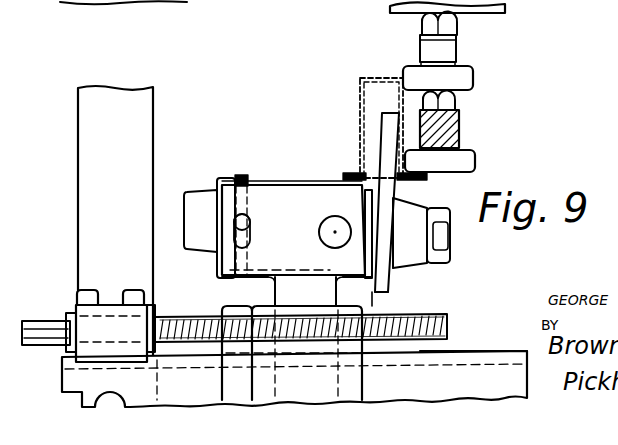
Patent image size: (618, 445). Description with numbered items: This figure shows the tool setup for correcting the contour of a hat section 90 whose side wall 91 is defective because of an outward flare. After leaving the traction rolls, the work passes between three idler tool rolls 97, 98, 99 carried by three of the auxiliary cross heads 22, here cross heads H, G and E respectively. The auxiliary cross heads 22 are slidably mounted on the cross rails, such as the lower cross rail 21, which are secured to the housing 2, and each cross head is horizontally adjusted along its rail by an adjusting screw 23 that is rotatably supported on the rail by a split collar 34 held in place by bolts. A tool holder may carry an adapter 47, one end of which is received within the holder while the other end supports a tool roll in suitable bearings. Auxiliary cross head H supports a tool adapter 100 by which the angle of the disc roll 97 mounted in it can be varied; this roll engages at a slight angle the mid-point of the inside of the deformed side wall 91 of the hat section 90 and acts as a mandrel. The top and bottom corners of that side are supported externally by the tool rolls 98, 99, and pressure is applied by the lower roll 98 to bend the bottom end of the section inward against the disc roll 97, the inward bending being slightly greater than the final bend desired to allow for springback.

The housing 2 is at (77, 165).
The split collar 34 is at (87, 306).
The adjusting screw 23 is at (200, 318).
The adapter 47 is at (268, 292).
The auxiliary cross head 22 is at (215, 382).
The lower cross rail 21 is at (445, 352).
The disc roll 97 is at (388, 304).
The auxiliary cross head H is at (388, 287).
The tool adapter 100 is at (312, 185).
The hat section 90 is at (358, 79).
The side wall 91 is at (399, 109).
The tool roll 99 is at (474, 82).
The auxiliary cross head G is at (462, 131).
The tool roll 98 is at (475, 158).
The auxiliary cross head E is at (507, 3).